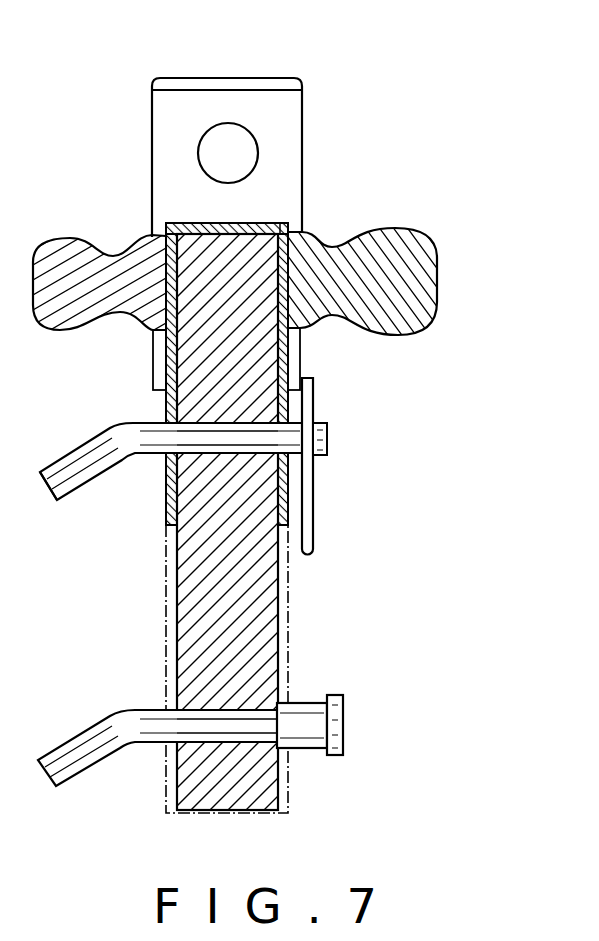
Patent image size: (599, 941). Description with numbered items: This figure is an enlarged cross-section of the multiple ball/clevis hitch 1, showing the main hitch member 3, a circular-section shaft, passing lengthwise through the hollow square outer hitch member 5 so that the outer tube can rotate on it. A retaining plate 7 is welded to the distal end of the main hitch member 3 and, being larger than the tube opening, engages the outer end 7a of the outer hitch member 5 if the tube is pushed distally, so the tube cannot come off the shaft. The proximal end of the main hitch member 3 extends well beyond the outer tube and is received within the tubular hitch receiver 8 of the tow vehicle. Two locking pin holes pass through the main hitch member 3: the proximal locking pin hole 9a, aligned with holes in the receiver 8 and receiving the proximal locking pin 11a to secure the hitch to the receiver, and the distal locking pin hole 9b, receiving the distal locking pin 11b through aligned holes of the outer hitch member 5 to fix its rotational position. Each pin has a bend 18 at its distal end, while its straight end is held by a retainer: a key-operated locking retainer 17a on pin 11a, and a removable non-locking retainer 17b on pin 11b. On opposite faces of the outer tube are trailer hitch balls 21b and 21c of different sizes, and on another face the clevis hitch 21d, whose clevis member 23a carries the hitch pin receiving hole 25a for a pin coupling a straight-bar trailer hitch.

The multiple ball/clevis hitch 1 is at (79, 166).
The main hitch member 3 is at (250, 589).
The outer hitch member 5 is at (292, 352).
The retaining plate 7 is at (201, 215).
The outer end of the outer hitch member 7a is at (284, 222).
The tubular hitch receiver 8 is at (160, 764).
The proximal locking pin hole 9a is at (225, 746).
The distal locking pin hole 9b is at (227, 460).
The proximal locking pin 11a is at (197, 717).
The distal locking pin 11b is at (171, 458).
The locking retainer 17a is at (313, 700).
The non-locking retainer 17b is at (313, 517).
The bend 18 is at (97, 482).
The trailer hitch ball 21b is at (81, 232).
The trailer hitch ball 21c is at (414, 229).
The clevis hitch 21d is at (308, 144).
The clevis member 23a is at (181, 122).
The hitch pin receiving hole 25a is at (210, 124).